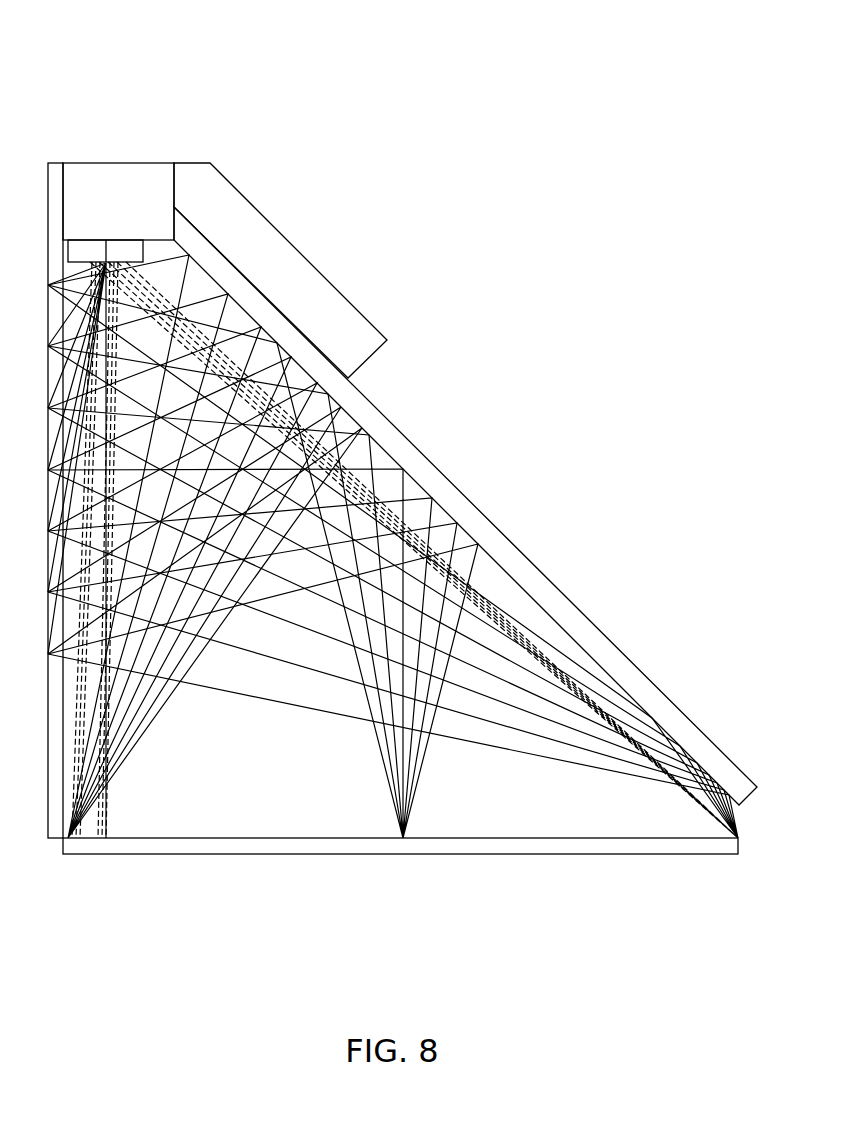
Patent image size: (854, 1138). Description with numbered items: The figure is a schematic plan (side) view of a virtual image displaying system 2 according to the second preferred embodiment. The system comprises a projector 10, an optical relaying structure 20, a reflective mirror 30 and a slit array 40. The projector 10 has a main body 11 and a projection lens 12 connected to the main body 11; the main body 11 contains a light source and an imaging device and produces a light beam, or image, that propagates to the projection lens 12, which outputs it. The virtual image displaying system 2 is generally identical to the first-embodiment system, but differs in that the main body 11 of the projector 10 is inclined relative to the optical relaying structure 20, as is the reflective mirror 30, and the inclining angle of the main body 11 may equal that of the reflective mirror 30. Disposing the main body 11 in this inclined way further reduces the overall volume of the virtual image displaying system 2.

The virtual image displaying system 2 is at (66, 37).
The projector 10 is at (108, 104).
The main body 11 is at (218, 185).
The projection lens 12 is at (118, 172).
The optical relaying structure 20 is at (437, 850).
The reflective mirror 30 is at (548, 580).
The slit array 40 is at (55, 842).